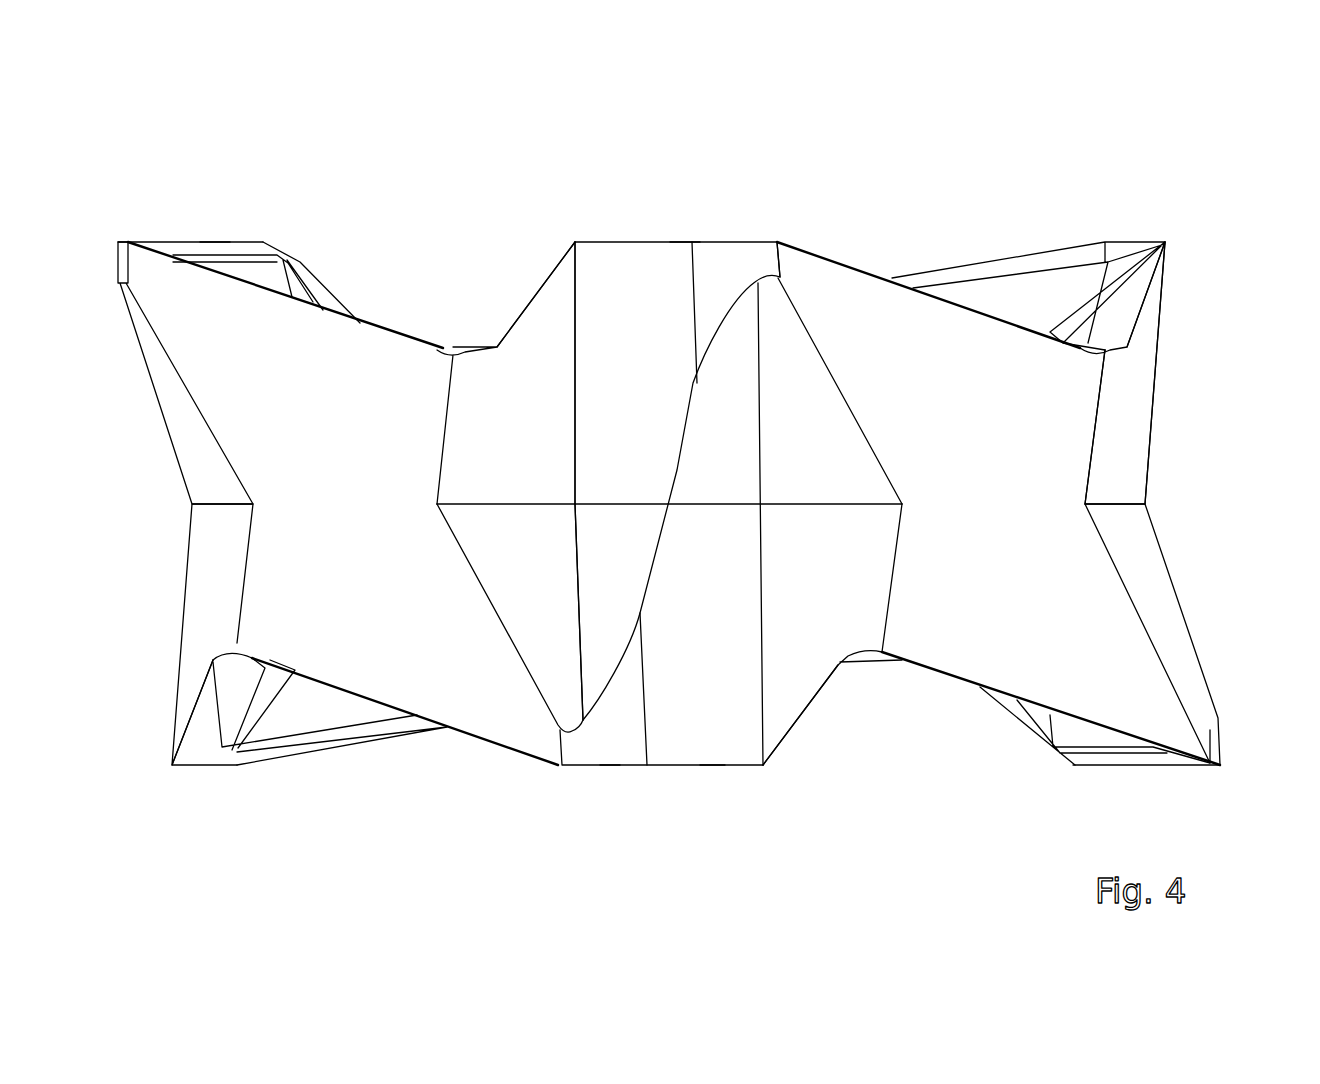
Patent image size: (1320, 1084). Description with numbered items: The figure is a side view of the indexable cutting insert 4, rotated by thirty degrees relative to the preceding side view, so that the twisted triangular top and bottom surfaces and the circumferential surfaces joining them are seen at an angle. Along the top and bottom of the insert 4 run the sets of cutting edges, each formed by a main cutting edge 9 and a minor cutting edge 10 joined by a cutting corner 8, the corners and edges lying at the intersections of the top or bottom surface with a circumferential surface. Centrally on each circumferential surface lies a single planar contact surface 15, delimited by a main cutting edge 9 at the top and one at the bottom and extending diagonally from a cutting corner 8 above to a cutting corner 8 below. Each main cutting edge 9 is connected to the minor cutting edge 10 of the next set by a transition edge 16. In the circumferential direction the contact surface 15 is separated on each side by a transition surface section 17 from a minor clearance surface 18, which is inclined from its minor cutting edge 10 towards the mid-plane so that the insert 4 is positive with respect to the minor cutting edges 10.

The cutting insert 4 is at (1205, 200).
The cutting corner 8 is at (122, 242).
The main cutting edge 9 is at (315, 303).
The minor cutting edge 10 is at (215, 242).
The planar contact surface 15 is at (282, 492).
The transition edge 16 is at (535, 297).
The transition surface section 17 is at (1133, 457).
The minor clearance surface 18 is at (617, 320).